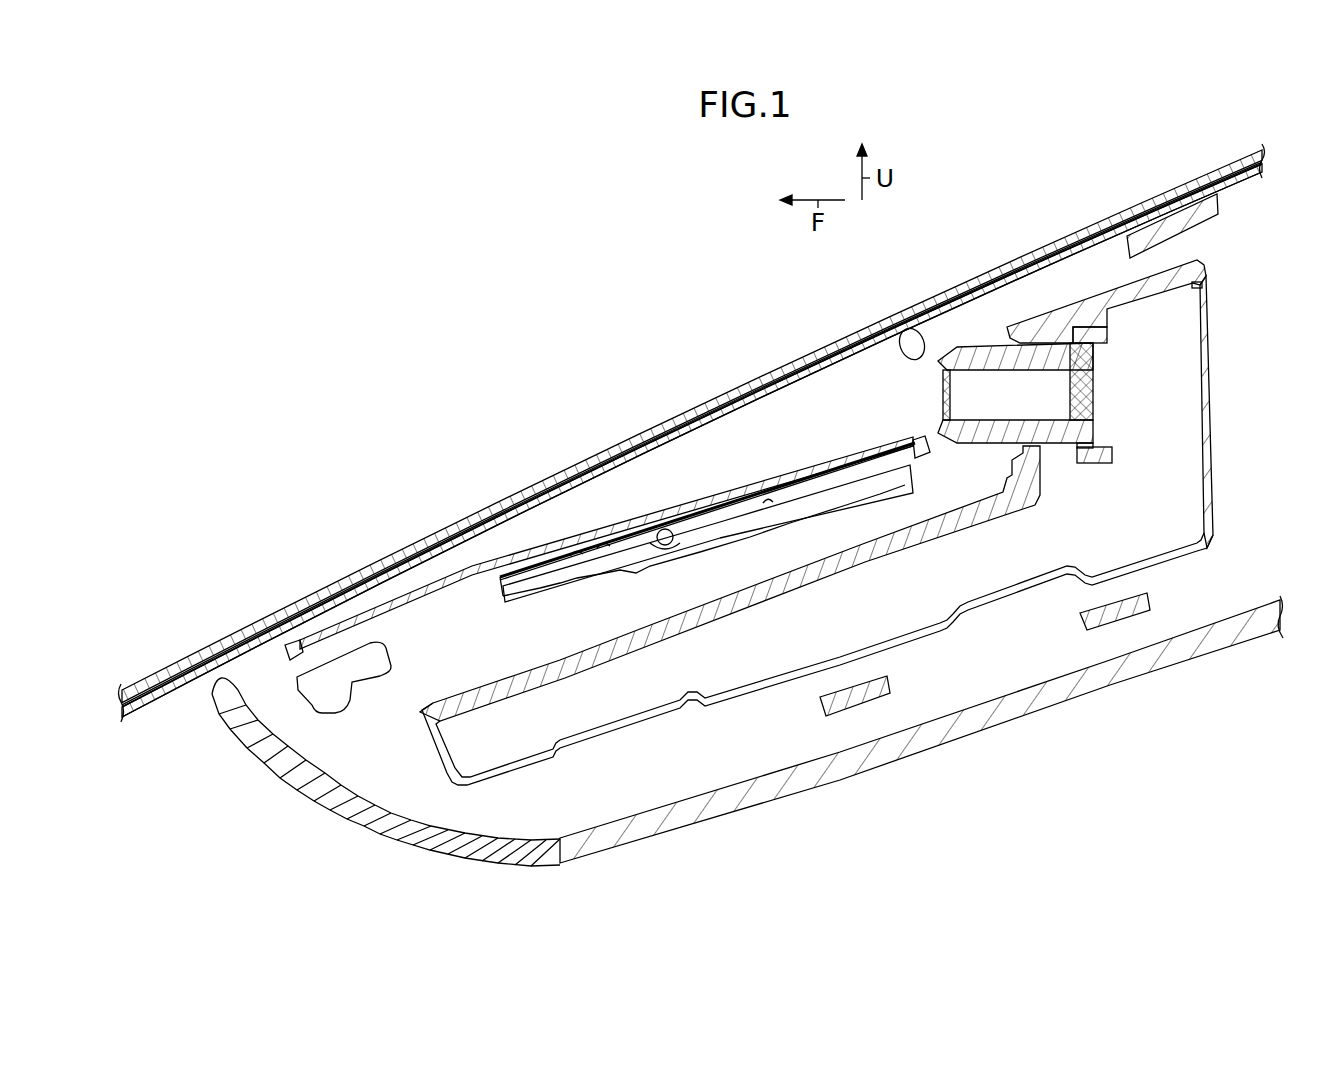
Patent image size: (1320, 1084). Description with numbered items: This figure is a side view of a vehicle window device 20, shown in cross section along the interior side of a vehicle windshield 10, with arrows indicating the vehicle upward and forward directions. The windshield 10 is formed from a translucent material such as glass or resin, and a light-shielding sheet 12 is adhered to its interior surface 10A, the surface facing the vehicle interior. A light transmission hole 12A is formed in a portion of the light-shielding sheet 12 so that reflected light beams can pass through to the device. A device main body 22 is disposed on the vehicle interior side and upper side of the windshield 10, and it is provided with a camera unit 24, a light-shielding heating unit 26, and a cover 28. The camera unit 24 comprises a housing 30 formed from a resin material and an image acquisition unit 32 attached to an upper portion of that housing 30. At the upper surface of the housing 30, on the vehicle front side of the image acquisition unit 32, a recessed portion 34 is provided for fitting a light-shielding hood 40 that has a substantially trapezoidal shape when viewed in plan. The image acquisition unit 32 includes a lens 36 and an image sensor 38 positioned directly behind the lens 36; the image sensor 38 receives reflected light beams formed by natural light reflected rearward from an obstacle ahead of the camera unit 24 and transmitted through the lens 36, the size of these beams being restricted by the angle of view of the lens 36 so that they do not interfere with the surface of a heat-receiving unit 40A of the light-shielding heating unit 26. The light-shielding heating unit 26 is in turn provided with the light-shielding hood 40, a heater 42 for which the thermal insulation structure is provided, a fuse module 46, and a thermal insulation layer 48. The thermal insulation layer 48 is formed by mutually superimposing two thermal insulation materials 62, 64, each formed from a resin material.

The windshield 10 is at (1122, 212).
The interior surface 10A is at (793, 386).
The light-shielding sheet 12 is at (1237, 192).
The light transmission hole 12A is at (920, 328).
The window device 20 is at (747, 754).
The device main body 22 is at (678, 828).
The camera unit 24 is at (1223, 461).
The light-shielding heating unit 26 is at (666, 500).
The cover 28 is at (528, 860).
The housing 30 is at (1185, 558).
The image acquisition unit 32 is at (1047, 439).
The recessed portion 34 is at (702, 612).
The lens 36 is at (941, 409).
The image sensor 38 is at (1093, 397).
The light-shielding hood 40 is at (477, 584).
The heat-receiving unit 40A is at (704, 507).
The heater 42 is at (926, 466).
The fuse module 46 is at (680, 534).
The thermal insulation layer 48 is at (721, 551).
The thermal insulation material 62 is at (838, 500).
The thermal insulation material 64 is at (888, 500).